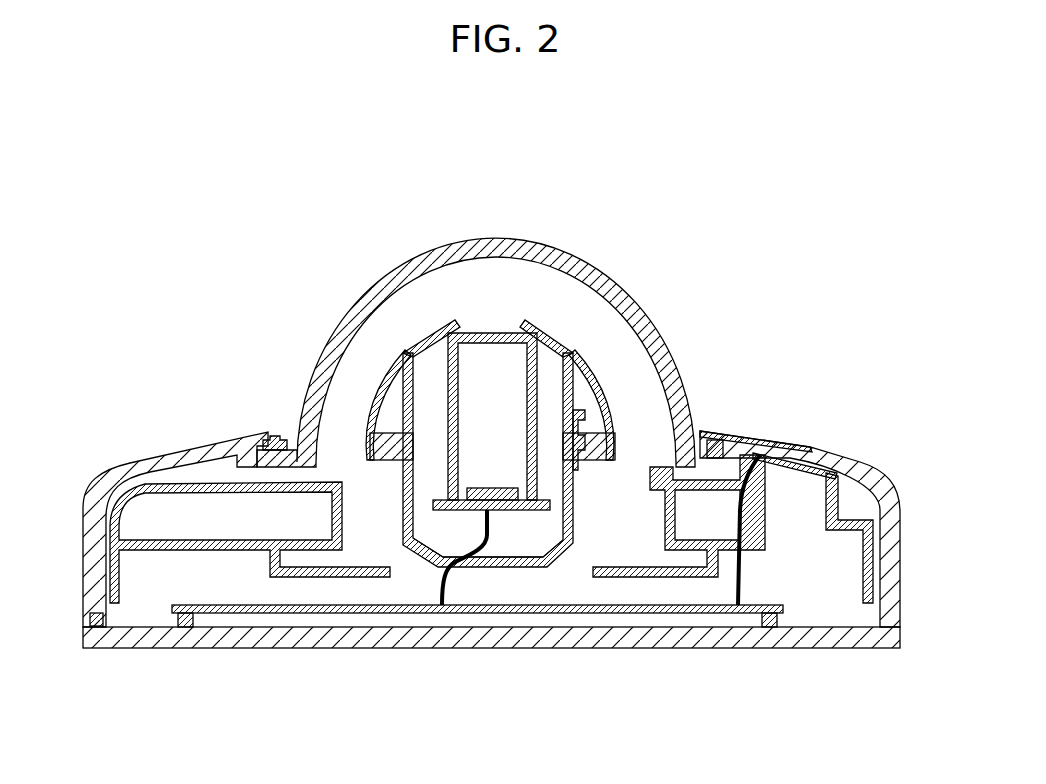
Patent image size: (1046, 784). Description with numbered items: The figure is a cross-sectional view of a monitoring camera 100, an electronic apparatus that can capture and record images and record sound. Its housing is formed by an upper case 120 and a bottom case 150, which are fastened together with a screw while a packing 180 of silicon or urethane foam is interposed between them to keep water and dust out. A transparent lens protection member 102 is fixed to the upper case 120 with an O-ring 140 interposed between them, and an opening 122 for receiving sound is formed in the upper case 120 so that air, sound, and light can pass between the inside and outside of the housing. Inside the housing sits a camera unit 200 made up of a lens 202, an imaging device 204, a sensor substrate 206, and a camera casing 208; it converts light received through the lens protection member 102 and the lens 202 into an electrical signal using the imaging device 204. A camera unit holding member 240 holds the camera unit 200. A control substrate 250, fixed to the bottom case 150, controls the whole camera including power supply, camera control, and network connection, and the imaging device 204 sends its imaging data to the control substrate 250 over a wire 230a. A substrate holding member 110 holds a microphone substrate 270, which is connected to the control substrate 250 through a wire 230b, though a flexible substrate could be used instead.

The monitoring camera 100 is at (481, 178).
The lens protection member 102 is at (634, 303).
The substrate holding member 110 is at (845, 470).
The upper case 120 is at (150, 457).
The opening 122 is at (806, 442).
The O-ring 140 is at (272, 437).
The bottom case 150 is at (226, 649).
The packing 180 is at (95, 638).
The camera unit 200 is at (552, 295).
The lens 202 is at (490, 332).
The imaging device 204 is at (490, 487).
The sensor substrate 206 is at (562, 500).
The camera casing 208 is at (532, 585).
The wire 230a is at (456, 588).
The wire 230b is at (732, 600).
The camera unit holding member 240 is at (366, 393).
The control substrate 250 is at (316, 617).
The microphone substrate 270 is at (796, 482).